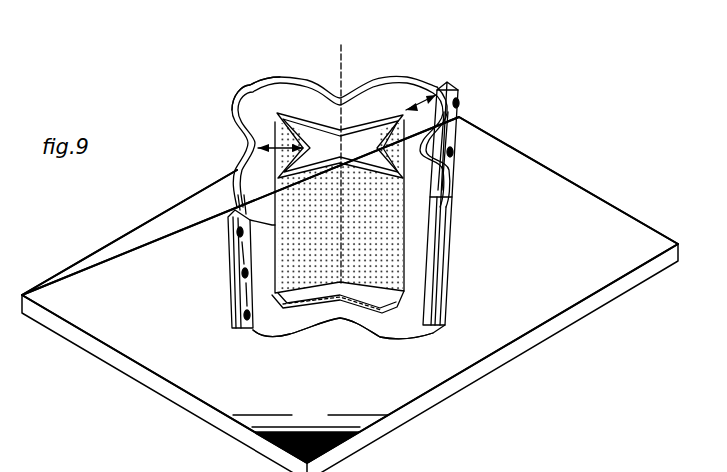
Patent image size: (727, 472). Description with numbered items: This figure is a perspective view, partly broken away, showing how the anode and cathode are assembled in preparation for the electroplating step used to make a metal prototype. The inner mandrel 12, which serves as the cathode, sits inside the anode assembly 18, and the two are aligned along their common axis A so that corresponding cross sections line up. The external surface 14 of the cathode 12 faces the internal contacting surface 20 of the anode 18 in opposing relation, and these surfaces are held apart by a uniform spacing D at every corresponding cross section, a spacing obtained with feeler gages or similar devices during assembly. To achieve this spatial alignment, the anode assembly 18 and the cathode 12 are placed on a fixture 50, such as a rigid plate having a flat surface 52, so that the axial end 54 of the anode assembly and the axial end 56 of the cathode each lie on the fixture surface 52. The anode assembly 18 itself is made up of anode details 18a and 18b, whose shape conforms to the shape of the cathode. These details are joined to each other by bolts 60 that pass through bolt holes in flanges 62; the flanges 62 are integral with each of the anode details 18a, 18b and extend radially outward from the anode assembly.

The inner mandrel 12 is at (357, 127).
The external surface of the cathode 14 is at (387, 263).
The anode assembly 18 is at (333, 182).
The anode detail 18a is at (312, 87).
The anode detail 18b is at (428, 254).
The internal surface of the anode 20 is at (250, 94).
The fixture 50 is at (488, 362).
The flat surface 52 is at (567, 267).
The axial end of the anode assembly 54 is at (293, 342).
The axial end of the cathode 56 is at (377, 318).
The bolts 60 is at (452, 150).
The flanges 62 is at (453, 164).
The common axis A is at (343, 68).
The uniform spacing D is at (279, 133).